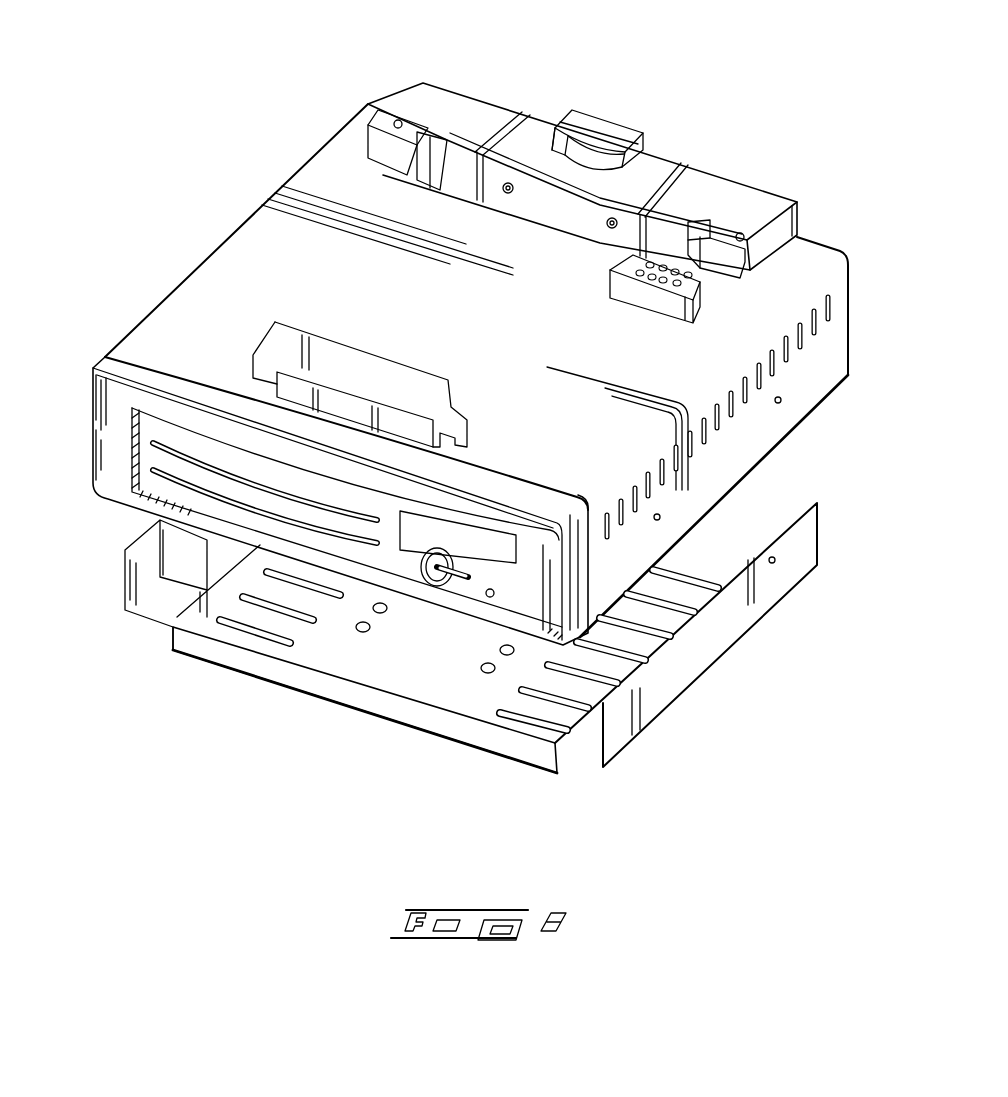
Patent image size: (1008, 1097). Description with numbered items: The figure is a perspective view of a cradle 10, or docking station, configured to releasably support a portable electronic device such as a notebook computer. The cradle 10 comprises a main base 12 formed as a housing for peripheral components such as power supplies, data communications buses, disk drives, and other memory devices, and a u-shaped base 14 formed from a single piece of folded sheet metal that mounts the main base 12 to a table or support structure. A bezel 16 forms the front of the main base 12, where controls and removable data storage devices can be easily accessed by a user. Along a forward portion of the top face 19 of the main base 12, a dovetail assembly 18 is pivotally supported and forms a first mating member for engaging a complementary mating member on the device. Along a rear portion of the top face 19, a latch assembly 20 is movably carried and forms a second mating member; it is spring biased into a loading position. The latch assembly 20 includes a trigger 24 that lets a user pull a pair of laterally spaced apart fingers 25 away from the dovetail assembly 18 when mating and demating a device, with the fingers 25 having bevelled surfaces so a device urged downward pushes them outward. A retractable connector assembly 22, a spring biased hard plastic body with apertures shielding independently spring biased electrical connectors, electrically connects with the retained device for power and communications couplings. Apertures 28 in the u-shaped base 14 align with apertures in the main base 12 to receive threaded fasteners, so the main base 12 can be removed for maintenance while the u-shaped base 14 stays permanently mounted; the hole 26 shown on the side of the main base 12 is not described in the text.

The cradle 10 is at (173, 164).
The main base 12 is at (842, 302).
The u-shaped base 14 is at (681, 671).
The bezel 16 is at (108, 485).
The dovetail assembly 18 is at (481, 369).
The top face 19 is at (395, 307).
The latch assembly 20 is at (394, 88).
The retractable connector assembly 22 is at (641, 308).
The trigger 24 is at (579, 159).
The fingers 25 is at (380, 146).
The hole 26 is at (782, 403).
The apertures 28 is at (777, 563).